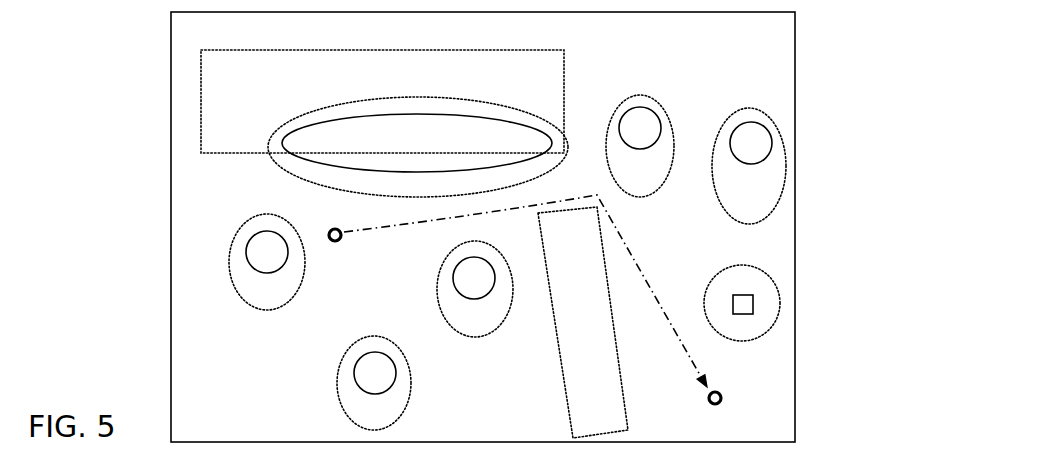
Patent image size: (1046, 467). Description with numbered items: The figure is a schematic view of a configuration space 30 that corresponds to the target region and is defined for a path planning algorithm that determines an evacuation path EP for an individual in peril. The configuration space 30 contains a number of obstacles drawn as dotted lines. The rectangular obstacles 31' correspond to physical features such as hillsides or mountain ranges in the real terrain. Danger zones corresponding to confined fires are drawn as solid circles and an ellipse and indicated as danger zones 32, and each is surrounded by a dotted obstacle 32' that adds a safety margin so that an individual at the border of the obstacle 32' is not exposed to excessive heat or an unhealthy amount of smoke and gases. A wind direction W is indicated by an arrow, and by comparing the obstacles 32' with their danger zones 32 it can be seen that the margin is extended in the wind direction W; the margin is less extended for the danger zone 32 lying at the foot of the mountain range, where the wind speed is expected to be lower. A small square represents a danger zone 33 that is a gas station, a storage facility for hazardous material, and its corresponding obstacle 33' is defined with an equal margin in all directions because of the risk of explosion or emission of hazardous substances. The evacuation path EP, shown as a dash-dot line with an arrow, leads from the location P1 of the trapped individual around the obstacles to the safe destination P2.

The configuration space 30 is at (798, 67).
The rectangular obstacles 31' is at (414, 237).
The danger zone representing a fire 32 is at (475, 224).
The obstacle corresponding to a fire danger zone 32' is at (486, 248).
The danger zone representing a storage facility for hazardous material 33 is at (788, 306).
The obstacle corresponding to the hazardous-material danger zone 33' is at (776, 302).
The evacuation path EP is at (633, 248).
The location of an individual P1 is at (337, 243).
The destination P2 is at (722, 398).
The wind direction W is at (108, 105).